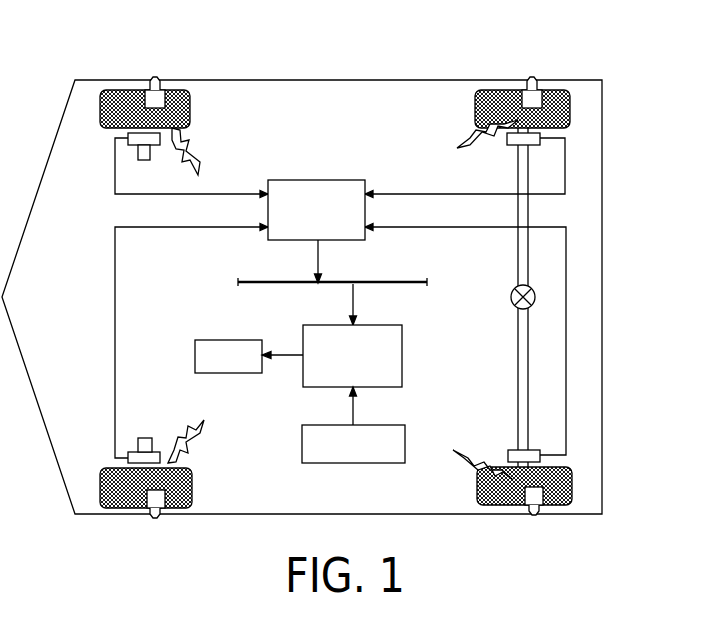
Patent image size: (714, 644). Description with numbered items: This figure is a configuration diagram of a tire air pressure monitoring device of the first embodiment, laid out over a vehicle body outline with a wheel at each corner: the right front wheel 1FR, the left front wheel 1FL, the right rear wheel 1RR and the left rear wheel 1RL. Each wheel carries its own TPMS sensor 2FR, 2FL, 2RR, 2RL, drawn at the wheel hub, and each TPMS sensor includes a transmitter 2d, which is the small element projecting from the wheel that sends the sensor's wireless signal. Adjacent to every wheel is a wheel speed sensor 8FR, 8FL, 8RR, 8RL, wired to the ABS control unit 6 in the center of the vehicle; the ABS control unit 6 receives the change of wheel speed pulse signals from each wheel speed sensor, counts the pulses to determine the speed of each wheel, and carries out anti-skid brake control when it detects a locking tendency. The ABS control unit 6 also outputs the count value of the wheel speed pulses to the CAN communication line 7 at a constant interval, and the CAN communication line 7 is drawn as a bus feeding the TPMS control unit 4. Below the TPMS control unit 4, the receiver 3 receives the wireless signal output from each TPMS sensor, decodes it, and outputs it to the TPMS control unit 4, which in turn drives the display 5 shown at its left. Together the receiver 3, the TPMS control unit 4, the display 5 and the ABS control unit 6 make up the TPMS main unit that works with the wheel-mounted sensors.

The right front wheel 1FR is at (107, 88).
The left front wheel 1FL is at (103, 517).
The right rear wheel 1RR is at (498, 88).
The left rear wheel 1RL is at (500, 507).
The TPMS sensor 2FR is at (182, 88).
The TPMS sensor 2FL is at (180, 513).
The TPMS sensor 2RR is at (558, 88).
The TPMS sensor 2RL is at (558, 510).
The transmitter 2d is at (155, 77).
The wheel speed sensor 8FR is at (128, 90).
The wheel speed sensor 8FL is at (127, 510).
The wheel speed sensor 8RR is at (510, 150).
The wheel speed sensor 8RL is at (515, 450).
The receiver 3 is at (302, 447).
The TPMS control unit 4 is at (402, 358).
The display 5 is at (212, 338).
The ABS control unit 6 is at (337, 180).
The CAN communication line 7 is at (388, 280).